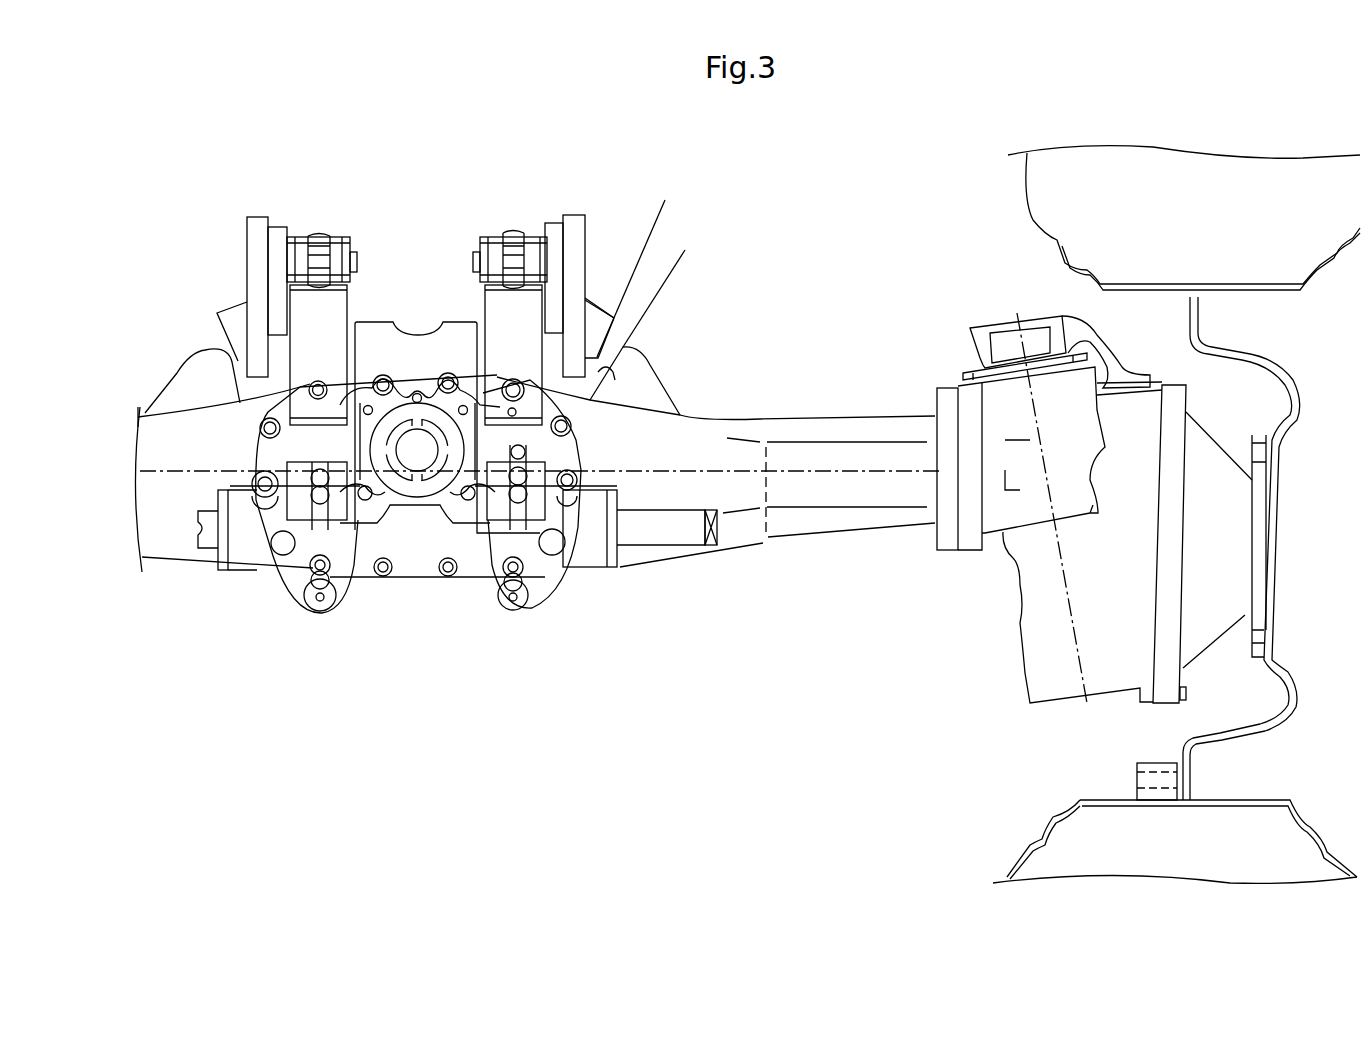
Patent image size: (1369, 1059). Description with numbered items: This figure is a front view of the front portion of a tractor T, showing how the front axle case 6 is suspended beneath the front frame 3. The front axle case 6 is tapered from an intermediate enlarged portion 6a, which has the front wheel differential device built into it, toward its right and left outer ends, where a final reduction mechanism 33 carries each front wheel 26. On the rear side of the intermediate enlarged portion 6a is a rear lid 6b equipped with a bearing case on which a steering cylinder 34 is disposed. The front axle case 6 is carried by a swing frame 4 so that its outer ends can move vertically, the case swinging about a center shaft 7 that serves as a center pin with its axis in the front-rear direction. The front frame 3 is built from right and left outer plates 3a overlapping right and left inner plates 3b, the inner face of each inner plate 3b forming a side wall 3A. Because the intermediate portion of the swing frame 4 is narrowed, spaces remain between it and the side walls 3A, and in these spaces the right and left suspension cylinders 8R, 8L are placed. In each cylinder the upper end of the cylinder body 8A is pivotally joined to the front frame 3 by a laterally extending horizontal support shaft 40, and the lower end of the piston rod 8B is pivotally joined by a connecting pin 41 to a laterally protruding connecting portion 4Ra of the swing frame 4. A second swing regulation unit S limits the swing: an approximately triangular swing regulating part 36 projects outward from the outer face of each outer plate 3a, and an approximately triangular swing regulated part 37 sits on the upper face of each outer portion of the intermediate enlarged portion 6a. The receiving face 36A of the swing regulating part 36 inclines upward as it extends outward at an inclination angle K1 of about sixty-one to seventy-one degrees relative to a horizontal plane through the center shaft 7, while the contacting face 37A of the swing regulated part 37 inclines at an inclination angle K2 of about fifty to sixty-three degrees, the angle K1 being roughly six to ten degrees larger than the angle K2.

The front frame 3 is at (618, 242).
The outer plate 3a is at (575, 227).
The inner plate 3b is at (553, 232).
The side wall 3A is at (295, 225).
The swing frame 4 is at (453, 296).
The connecting portion 4Ra is at (522, 592).
The front axle case 6 is at (293, 553).
The intermediate enlarged portion 6a is at (272, 572).
The rear lid 6b is at (350, 585).
The center shaft 7 is at (410, 503).
The cylinder body 8A is at (305, 385).
The piston rod 8B is at (312, 430).
The left pivot post 8L is at (326, 207).
The right pivot post 8R is at (527, 210).
The front wheel 26 is at (1047, 213).
The final reduction mechanism 33 is at (1010, 622).
The steering cylinder 34 is at (589, 557).
The swing regulating part 36 is at (597, 320).
The receiving face 36A is at (217, 328).
The swing regulated part 37 is at (662, 393).
The contacting face 37A is at (220, 383).
The horizontal support shaft 40 is at (334, 260).
The connecting pin 41 is at (495, 507).
The inclination angle K1 is at (679, 226).
The inclination angle K2 is at (693, 273).
The second swing regulation unit S is at (179, 300).
The tractor T is at (1130, 513).